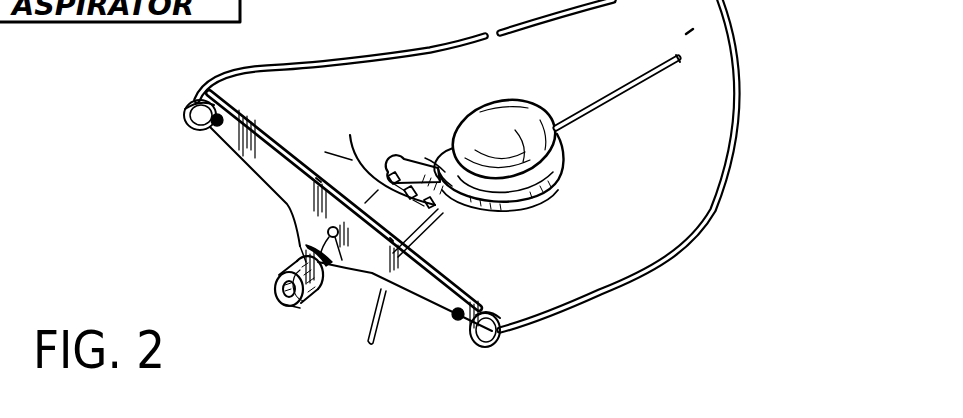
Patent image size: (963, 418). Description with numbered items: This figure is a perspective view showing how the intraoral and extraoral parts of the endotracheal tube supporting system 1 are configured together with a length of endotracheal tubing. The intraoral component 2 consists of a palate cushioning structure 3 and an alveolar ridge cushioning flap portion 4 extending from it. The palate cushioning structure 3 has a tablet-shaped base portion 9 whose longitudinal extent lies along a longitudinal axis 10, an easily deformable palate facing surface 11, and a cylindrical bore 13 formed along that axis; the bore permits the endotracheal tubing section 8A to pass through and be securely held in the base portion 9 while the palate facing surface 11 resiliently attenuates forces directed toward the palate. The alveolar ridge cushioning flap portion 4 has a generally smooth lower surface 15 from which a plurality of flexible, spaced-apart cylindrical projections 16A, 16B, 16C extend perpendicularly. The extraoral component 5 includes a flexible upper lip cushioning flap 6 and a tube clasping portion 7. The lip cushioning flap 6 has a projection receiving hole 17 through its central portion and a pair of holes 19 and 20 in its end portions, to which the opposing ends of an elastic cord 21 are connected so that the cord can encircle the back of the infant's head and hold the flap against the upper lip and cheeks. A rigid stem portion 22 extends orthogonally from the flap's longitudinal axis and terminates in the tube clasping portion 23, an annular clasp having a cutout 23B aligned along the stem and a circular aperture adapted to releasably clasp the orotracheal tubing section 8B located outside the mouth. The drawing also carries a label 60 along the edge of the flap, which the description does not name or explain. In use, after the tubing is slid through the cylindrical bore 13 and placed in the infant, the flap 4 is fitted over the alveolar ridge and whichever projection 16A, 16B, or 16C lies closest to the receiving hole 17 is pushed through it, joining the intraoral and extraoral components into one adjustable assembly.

The endotracheal tube supporting system 1 is at (181, 190).
The intraoral component 2 is at (560, 183).
The palate cushioning structure 3 is at (563, 149).
The alveolar ridge cushioning flap portion 4 is at (429, 145).
The extraoral component 5 is at (253, 227).
The flexible upper lip cushioning flap 6 is at (280, 173).
The tube clasping portion 7 is at (312, 311).
The endotracheal tubing section 8A is at (579, 110).
The orotracheal tubing section 8B is at (370, 343).
The base portion 9 is at (518, 197).
The longitudinal axis 10 is at (673, 44).
The palate facing surface 11 is at (502, 116).
The cylindrical bore 13 is at (462, 197).
The lower surface 15 is at (411, 150).
The projection 16A is at (449, 218).
The projection 16B is at (327, 143).
The projection 16C is at (389, 152).
The projection receiving hole 17 is at (341, 268).
The hole 19 is at (186, 121).
The hole 20 is at (456, 320).
The elastic cord 21 is at (651, 272).
The rigid stem portion 22 is at (305, 251).
The tube clasping portion 23 is at (281, 283).
The cutout 23B is at (281, 306).
The guide rail 60 is at (276, 134).